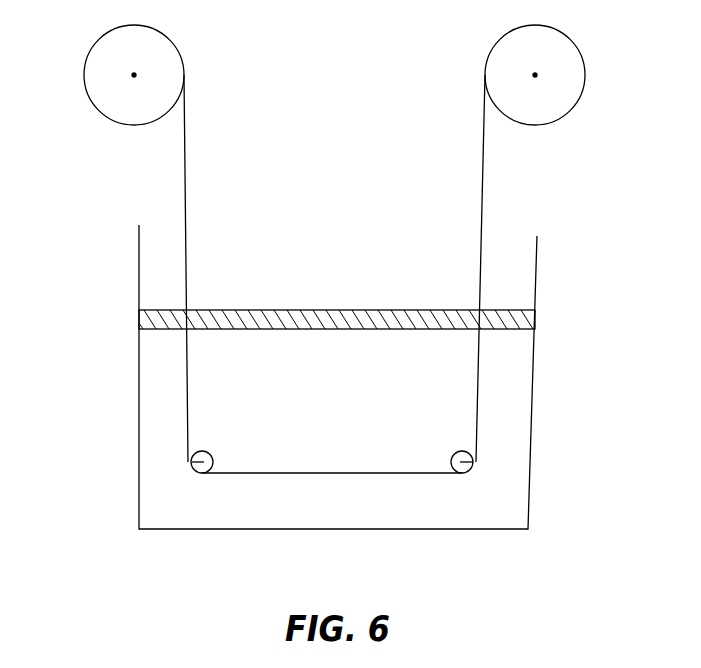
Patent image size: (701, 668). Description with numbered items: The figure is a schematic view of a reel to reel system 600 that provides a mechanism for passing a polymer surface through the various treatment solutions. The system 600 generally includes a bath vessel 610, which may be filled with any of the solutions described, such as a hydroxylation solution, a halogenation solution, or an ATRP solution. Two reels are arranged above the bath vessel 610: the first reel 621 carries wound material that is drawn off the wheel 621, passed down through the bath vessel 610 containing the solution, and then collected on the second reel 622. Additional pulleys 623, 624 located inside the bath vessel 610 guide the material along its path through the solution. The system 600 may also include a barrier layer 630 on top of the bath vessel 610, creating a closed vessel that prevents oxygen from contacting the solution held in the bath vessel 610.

The reel to reel system 600 is at (670, 205).
The bath vessel 610 is at (305, 447).
The first reel 621 is at (561, 74).
The second reel 622 is at (108, 76).
The pulley 623 is at (472, 462).
The pulley 624 is at (192, 462).
The barrier layer 630 is at (258, 320).